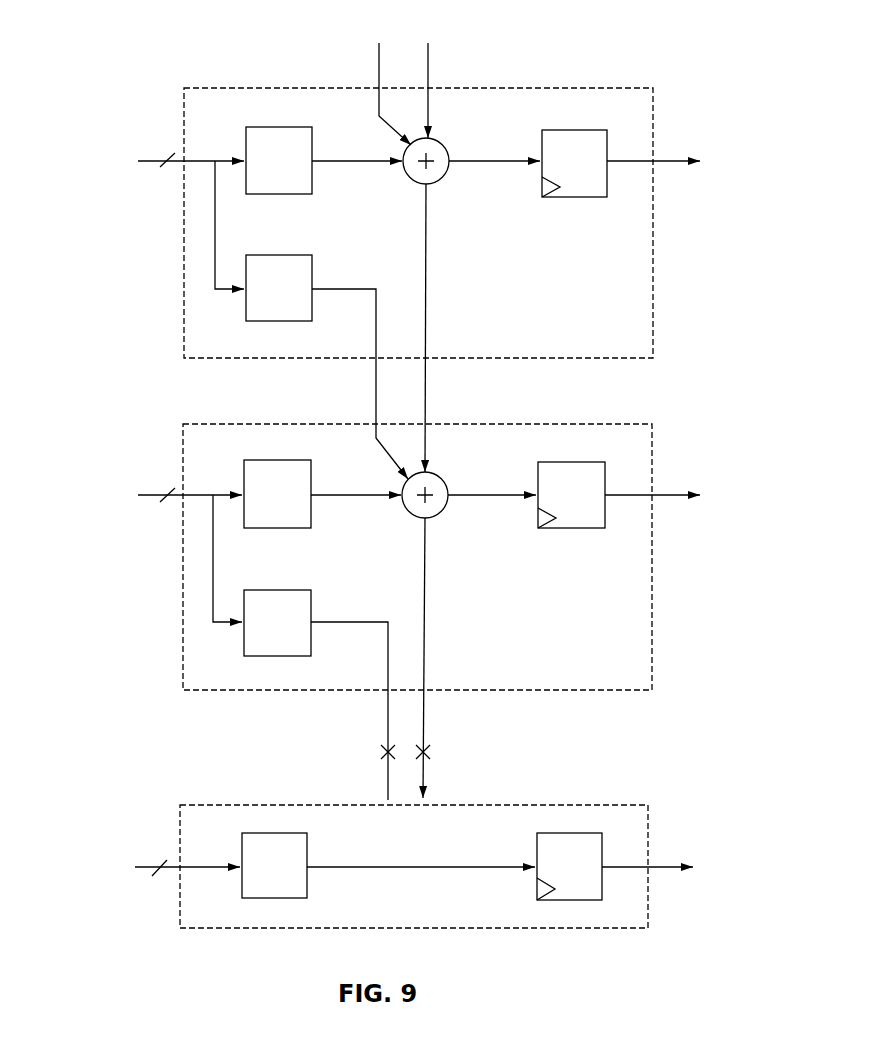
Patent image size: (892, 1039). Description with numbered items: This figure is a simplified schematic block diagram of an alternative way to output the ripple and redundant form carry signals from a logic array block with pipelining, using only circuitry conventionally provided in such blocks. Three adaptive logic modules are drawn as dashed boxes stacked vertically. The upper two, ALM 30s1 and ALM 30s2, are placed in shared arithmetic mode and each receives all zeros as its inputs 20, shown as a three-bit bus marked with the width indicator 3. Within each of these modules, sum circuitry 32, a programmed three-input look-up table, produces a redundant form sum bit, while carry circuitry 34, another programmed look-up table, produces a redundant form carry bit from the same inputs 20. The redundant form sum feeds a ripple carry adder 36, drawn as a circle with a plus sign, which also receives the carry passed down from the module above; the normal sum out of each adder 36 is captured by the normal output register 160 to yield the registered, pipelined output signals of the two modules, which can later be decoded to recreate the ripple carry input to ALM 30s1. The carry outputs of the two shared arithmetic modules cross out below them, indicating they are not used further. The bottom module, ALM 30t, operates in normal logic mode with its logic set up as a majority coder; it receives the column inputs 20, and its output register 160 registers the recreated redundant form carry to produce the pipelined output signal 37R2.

The variable inputs 20 is at (150, 161).
The bus width indicator 3 is at (163, 501).
The sum circuitry 32 is at (280, 127).
The carry circuitry 34 is at (245, 302).
The ripple carry adder 36 is at (442, 145).
The normal output register 160 is at (575, 197).
The first shared arithmetic ALM 30s1 is at (655, 312).
The second shared arithmetic ALM 30s2 is at (655, 647).
The normal logic mode ALM 30t is at (652, 908).
The pipelined redundant form carry output signal 37R2 is at (662, 867).